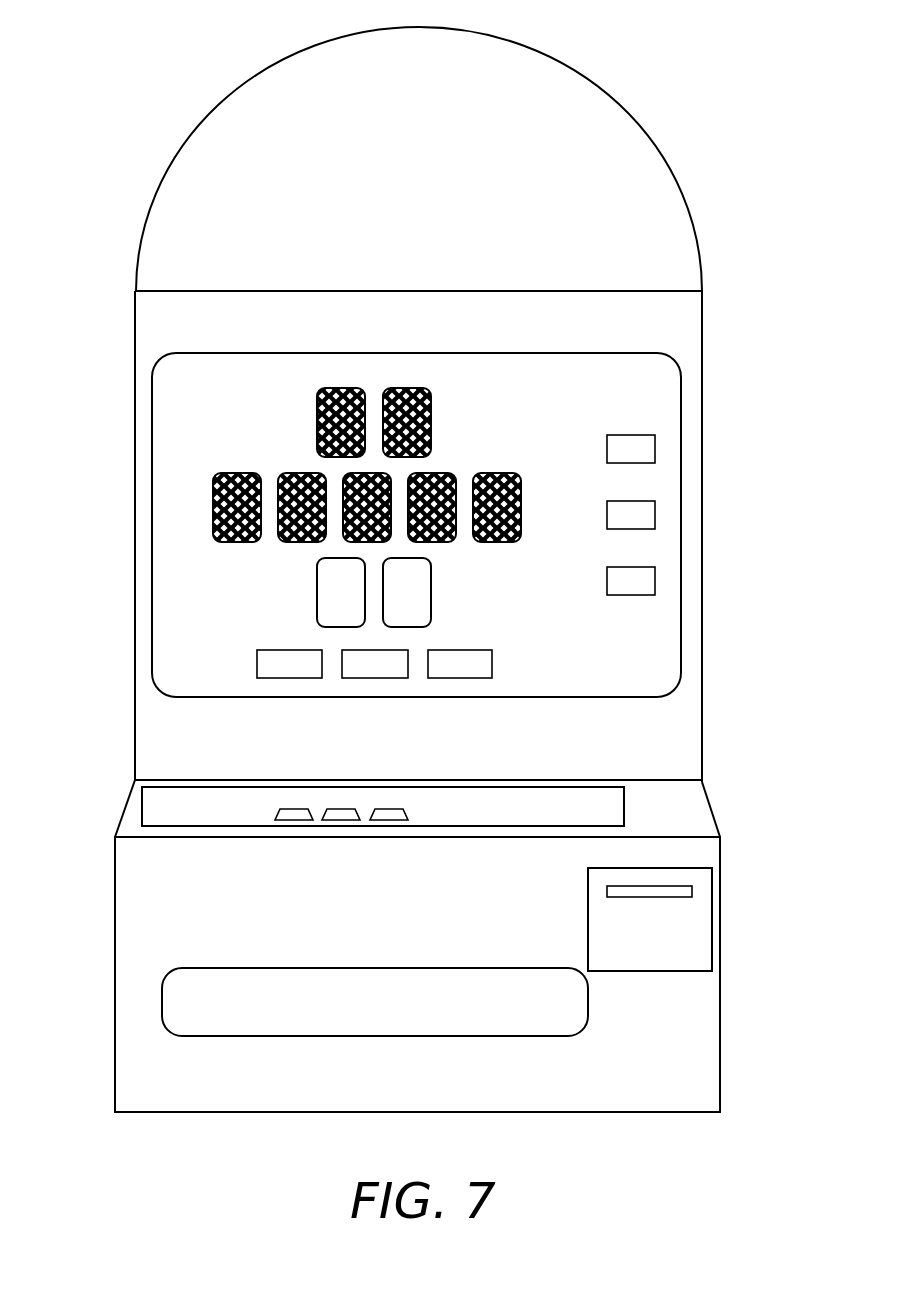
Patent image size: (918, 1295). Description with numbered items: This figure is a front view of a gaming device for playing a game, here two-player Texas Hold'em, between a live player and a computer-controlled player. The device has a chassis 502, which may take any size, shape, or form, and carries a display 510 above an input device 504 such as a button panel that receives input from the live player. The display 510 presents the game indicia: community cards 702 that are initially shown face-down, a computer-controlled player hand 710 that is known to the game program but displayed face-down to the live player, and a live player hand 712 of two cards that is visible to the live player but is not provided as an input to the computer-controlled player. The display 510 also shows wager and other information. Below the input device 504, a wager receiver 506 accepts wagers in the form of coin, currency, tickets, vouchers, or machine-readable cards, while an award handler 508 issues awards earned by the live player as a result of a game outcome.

The chassis 502 is at (207, 84).
The display 510 is at (153, 383).
The computer-controlled player hand 710 is at (316, 442).
The community cards 702 is at (211, 518).
The live player hand 712 is at (316, 612).
The input device 504 is at (153, 810).
The wager receiver 506 is at (692, 887).
The award handler 508 is at (163, 990).